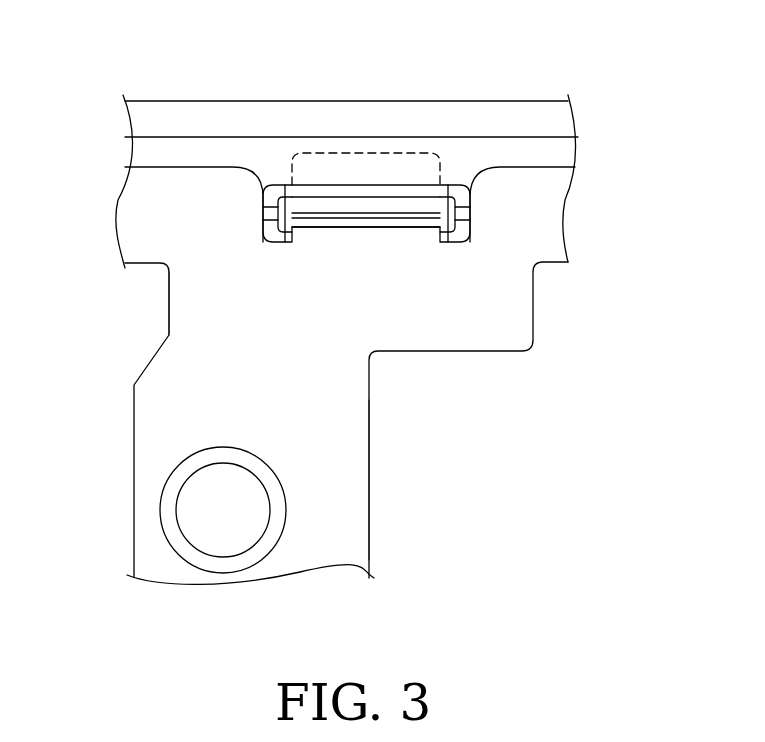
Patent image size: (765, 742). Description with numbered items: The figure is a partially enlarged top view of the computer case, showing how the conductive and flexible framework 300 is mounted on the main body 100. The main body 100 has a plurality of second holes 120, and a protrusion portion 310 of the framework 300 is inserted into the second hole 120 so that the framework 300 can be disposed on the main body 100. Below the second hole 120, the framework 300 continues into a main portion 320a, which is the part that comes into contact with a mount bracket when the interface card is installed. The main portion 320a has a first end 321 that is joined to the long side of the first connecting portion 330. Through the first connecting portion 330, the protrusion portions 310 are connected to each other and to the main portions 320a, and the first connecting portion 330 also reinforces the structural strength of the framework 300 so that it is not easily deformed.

The main body 100 is at (187, 117).
The second hole 120 is at (447, 207).
The framework 300 is at (543, 308).
The protrusion portion 310 is at (351, 207).
The main portion 320a is at (158, 418).
The first end 321 is at (371, 430).
The first connecting portion 330 is at (225, 310).